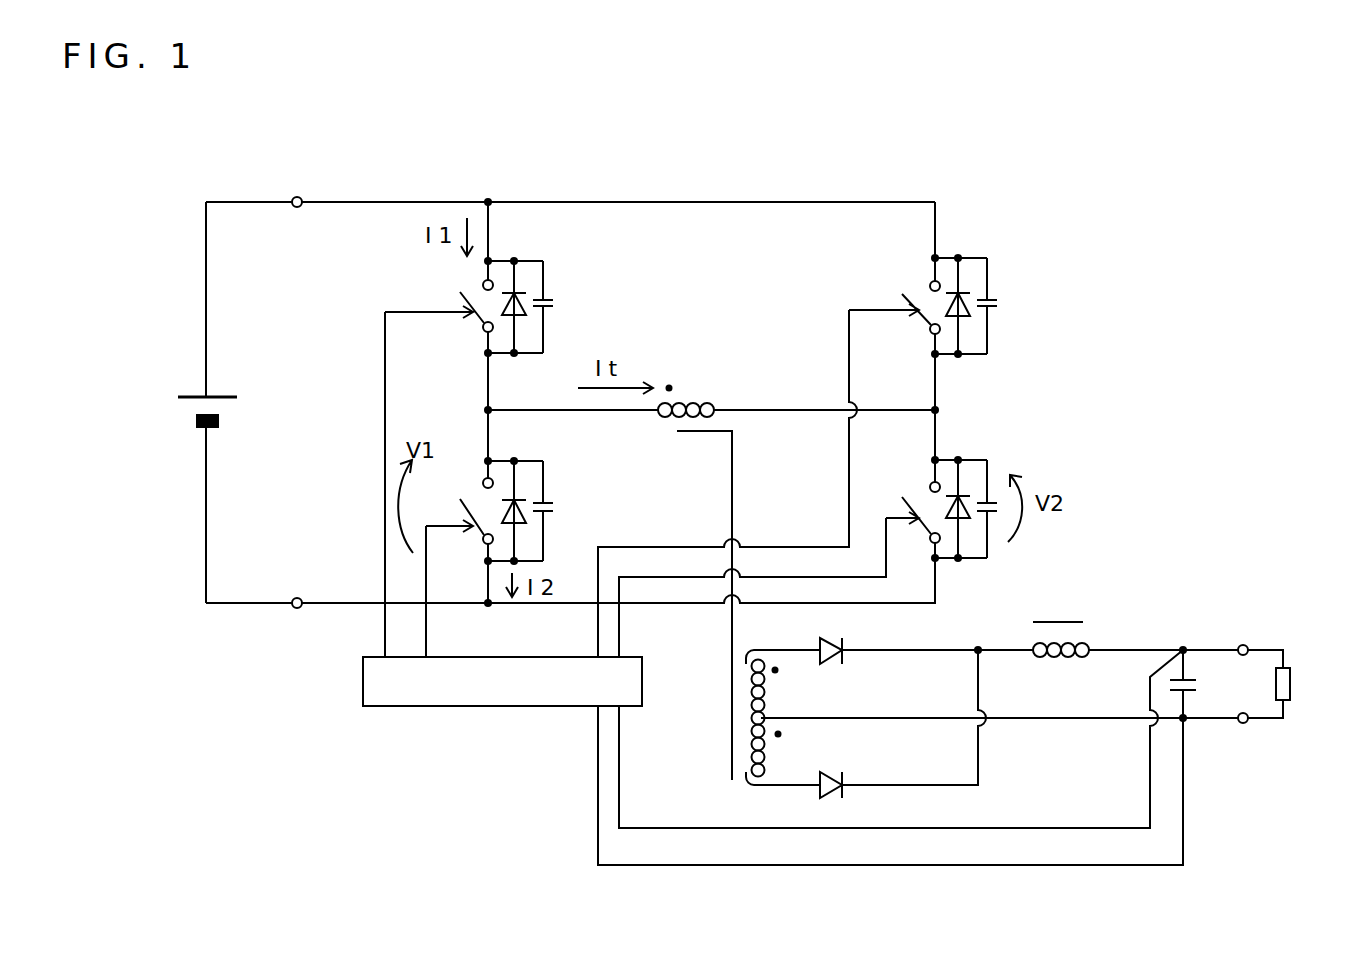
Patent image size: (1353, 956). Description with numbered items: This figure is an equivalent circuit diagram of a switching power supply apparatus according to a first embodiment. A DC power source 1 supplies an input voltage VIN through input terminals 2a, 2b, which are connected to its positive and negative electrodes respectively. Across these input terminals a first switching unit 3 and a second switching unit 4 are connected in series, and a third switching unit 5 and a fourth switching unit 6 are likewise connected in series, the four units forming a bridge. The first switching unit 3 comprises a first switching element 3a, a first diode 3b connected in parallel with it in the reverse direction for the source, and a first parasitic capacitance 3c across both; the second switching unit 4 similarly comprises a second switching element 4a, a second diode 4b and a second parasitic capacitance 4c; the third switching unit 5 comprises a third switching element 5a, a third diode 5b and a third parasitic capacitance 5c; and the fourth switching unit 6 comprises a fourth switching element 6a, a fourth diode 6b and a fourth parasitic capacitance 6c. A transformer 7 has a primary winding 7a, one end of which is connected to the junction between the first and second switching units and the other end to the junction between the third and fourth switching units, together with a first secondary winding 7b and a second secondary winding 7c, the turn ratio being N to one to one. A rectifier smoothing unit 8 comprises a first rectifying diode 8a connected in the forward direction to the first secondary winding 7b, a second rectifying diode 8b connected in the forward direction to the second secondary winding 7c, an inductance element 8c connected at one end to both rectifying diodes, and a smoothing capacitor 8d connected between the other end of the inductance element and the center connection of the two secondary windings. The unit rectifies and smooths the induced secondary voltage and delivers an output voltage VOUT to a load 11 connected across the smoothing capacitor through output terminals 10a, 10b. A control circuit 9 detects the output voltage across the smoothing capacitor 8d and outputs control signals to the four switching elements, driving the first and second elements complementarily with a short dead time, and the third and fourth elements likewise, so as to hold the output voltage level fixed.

The DC power source 1 is at (190, 395).
The input terminal 2a is at (301, 197).
The input terminal 2b is at (299, 598).
The first switching unit 3 is at (490, 285).
The first switching element 3a is at (462, 302).
The first diode 3b is at (525, 286).
The first parasitic capacitance 3c is at (554, 303).
The second switching unit 4 is at (511, 536).
The second switching element 4a is at (483, 534).
The second diode 4b is at (524, 492).
The second parasitic capacitance 4c is at (555, 508).
The third switching unit 5 is at (820, 410).
The third switching element 5a is at (915, 300).
The third diode 5b is at (967, 290).
The third parasitic capacitance 5c is at (999, 303).
The fourth switching unit 6 is at (823, 514).
The fourth switching element 6a is at (915, 500).
The fourth diode 6b is at (965, 492).
The fourth parasitic capacitance 6c is at (1000, 506).
The transformer 7 is at (920, 569).
The primary winding 7a is at (702, 402).
The first secondary winding 7b is at (776, 681).
The second secondary winding 7c is at (779, 757).
The rectifier smoothing unit 8 is at (924, 706).
The first rectifying diode 8a is at (820, 648).
The second rectifying diode 8b is at (820, 790).
The inductance element 8c is at (1070, 621).
The smoothing capacitor 8d is at (1196, 681).
The control circuit 9 is at (420, 707).
The output terminal 10a is at (1246, 645).
The output terminal 10b is at (1246, 723).
The load 11 is at (1291, 683).